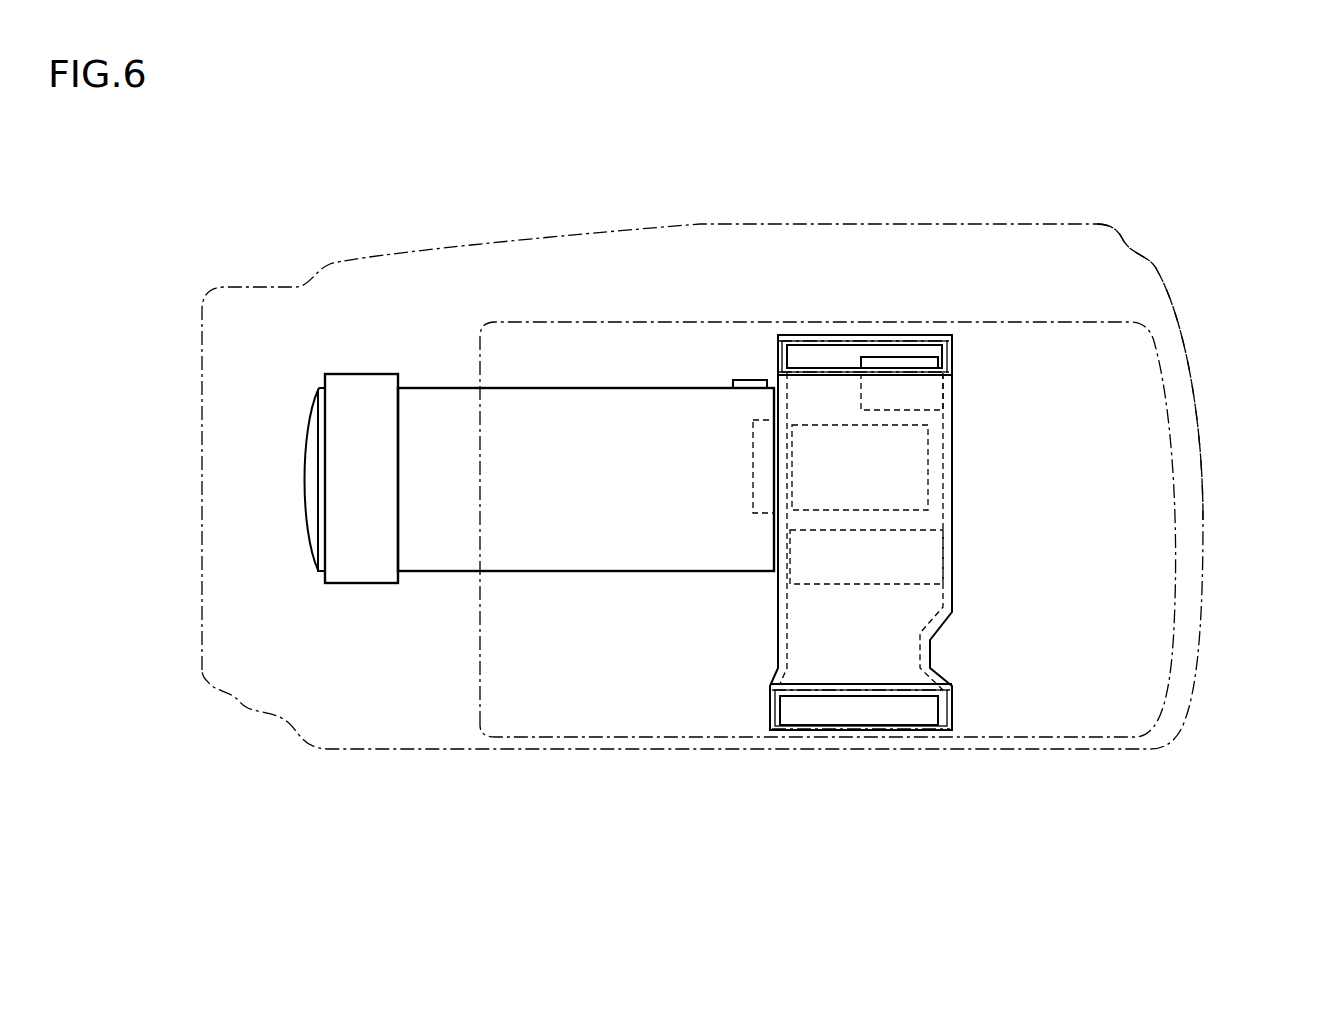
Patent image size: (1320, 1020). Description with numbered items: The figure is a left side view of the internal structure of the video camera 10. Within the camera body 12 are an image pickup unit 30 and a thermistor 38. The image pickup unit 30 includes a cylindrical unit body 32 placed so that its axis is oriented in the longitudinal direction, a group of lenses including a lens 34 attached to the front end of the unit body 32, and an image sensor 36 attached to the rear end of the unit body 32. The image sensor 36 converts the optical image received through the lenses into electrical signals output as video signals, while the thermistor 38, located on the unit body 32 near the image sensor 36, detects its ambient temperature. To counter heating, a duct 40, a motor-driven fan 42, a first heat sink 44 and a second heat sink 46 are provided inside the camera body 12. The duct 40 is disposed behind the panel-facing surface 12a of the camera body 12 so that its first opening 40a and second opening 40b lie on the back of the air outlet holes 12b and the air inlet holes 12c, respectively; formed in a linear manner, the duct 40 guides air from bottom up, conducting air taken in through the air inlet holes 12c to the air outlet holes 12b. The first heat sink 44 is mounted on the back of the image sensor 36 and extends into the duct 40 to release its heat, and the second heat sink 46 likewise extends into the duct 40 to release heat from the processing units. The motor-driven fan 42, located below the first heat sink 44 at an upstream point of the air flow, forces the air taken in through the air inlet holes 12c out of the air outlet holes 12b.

The video camera 10 is at (1141, 231).
The camera body 12 is at (987, 223).
The panel-facing surface 12a is at (1083, 320).
The air outlet holes 12b is at (945, 357).
The air inlet holes 12c is at (918, 730).
The image pickup unit 30 is at (452, 356).
The unit body 32 is at (374, 374).
The lens 34 is at (305, 418).
The image sensor 36 is at (753, 513).
The thermistor 38 is at (742, 380).
The duct 40 is at (953, 395).
The first opening 40a is at (788, 360).
The second opening 40b is at (780, 707).
The motor-driven fan 42 is at (917, 584).
The first heat sink 44 is at (928, 477).
The second heat sink 46 is at (923, 410).